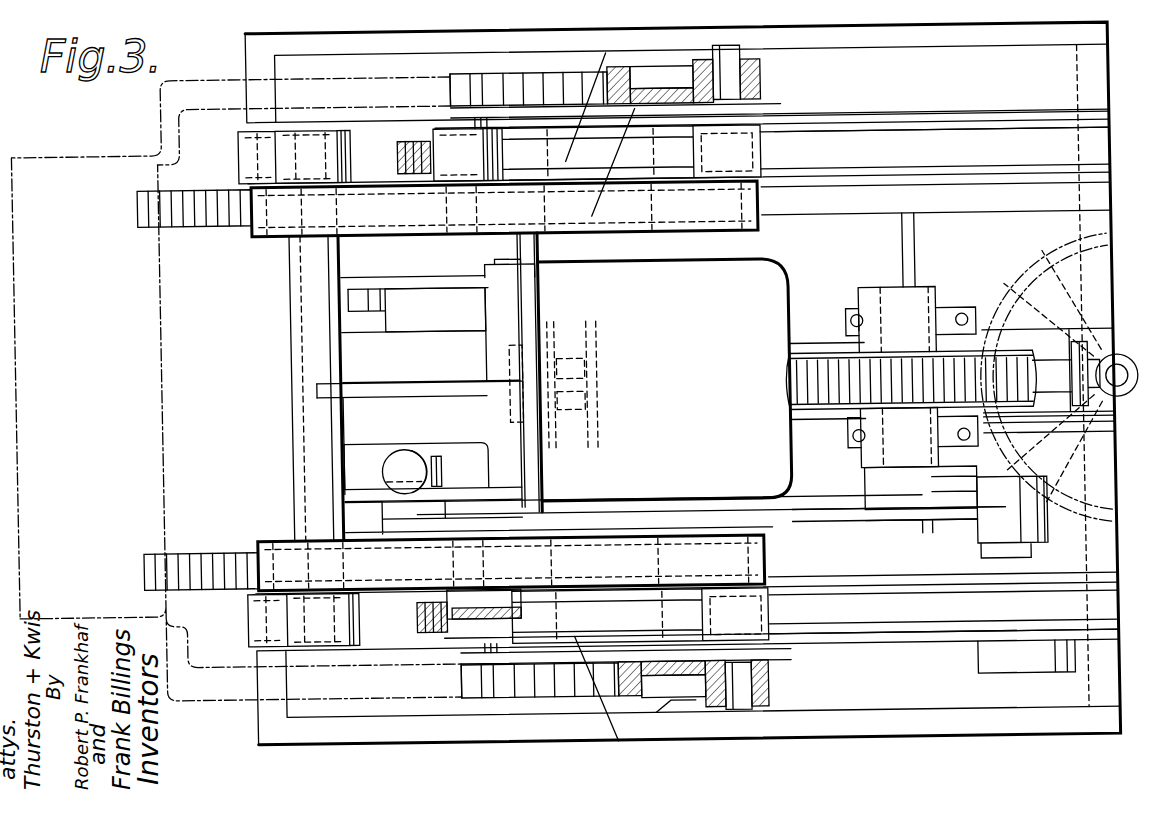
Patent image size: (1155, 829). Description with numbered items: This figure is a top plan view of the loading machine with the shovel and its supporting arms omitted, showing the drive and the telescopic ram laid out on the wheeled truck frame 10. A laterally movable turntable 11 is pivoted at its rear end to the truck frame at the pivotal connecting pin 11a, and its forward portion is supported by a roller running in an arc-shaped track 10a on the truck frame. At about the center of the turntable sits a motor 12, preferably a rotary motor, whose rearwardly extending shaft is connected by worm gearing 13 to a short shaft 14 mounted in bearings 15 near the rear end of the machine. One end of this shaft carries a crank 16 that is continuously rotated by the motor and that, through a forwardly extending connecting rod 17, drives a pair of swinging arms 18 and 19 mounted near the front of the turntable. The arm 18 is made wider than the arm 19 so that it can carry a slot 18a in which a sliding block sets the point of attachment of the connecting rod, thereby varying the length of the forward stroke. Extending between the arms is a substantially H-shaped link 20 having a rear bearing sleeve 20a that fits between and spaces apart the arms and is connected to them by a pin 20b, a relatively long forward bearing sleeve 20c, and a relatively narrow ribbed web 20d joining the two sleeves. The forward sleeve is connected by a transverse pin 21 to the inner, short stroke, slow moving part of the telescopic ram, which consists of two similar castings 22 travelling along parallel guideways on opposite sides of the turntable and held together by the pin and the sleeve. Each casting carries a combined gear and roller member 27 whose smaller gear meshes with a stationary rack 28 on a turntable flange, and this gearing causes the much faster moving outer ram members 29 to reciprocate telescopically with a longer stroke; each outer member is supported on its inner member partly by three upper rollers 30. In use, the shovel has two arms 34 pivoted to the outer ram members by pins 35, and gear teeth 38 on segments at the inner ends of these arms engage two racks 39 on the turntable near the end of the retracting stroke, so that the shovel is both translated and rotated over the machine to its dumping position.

The truck frame 10 is at (683, 383).
The arc-shaped track 10a is at (650, 713).
The turntable 11 is at (1040, 492).
The pivotal connecting pin 11a is at (1116, 384).
The motor 12 is at (673, 386).
The worm gearing 13 is at (832, 352).
The short shaft 14 is at (895, 287).
The bearings 15 is at (945, 292).
The crank 16 is at (965, 497).
The connecting rod 17 is at (858, 520).
The swinging arm 18 is at (462, 483).
The slot 18a is at (392, 460).
The swinging arm 19 is at (465, 283).
The link 20 is at (425, 328).
The rear bearing sleeve 20a is at (518, 305).
The pin 20b is at (520, 257).
The forward bearing sleeve 20c is at (292, 266).
The ribbed web 20d is at (400, 395).
The transverse pin 21 is at (305, 452).
The inner ram members 22 is at (250, 537).
The combined gear and roller member 27 is at (413, 617).
The stationary rack 28 is at (152, 548).
The outer ram members 29 is at (939, 380).
The upper rollers 30 is at (720, 615).
The shovel arms 34 is at (100, 610).
The pins 35 is at (766, 686).
The gear teeth 38 is at (600, 690).
The racks 39 is at (472, 690).